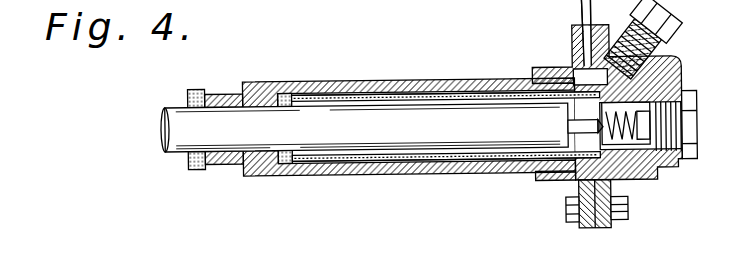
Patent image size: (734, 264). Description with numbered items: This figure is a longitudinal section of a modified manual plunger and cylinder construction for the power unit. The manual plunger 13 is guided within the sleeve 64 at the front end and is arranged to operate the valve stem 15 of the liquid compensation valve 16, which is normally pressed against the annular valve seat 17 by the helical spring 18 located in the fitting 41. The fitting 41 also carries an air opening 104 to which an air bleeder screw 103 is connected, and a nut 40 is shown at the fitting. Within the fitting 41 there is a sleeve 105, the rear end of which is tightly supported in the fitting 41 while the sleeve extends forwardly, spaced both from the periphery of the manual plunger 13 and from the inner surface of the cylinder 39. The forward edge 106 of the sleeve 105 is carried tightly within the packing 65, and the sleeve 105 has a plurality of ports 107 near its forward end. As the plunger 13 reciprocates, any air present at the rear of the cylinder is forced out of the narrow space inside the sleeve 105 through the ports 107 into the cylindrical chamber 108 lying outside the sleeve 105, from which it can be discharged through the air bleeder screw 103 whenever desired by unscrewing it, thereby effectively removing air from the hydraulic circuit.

The manual plunger 13 is at (185, 134).
The valve stem 15 is at (572, 124).
The liquid compensation valve 16 is at (600, 129).
The annular valve seat 17 is at (603, 109).
The helical spring 18 is at (626, 150).
The cylinder 39 is at (372, 83).
The nut 40 is at (694, 112).
The fitting 41 is at (671, 162).
The sleeve 64 is at (216, 95).
The packing 65 is at (289, 94).
The air bleeder screw 103 is at (665, 30).
The air opening 104 is at (620, 76).
The sleeve 105 is at (426, 164).
The forward edge 106 is at (287, 156).
The ports 107 is at (309, 157).
The cylindrical chamber 108 is at (378, 164).